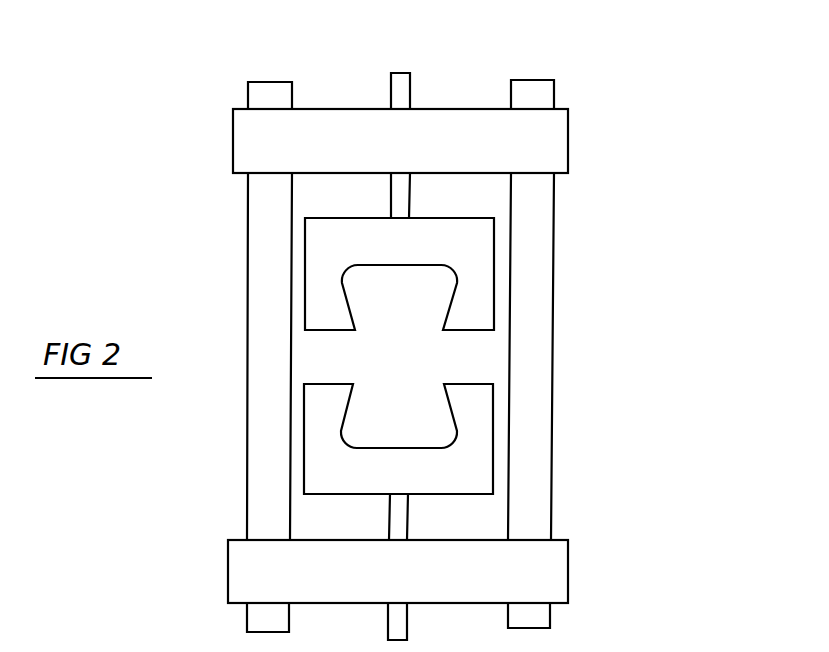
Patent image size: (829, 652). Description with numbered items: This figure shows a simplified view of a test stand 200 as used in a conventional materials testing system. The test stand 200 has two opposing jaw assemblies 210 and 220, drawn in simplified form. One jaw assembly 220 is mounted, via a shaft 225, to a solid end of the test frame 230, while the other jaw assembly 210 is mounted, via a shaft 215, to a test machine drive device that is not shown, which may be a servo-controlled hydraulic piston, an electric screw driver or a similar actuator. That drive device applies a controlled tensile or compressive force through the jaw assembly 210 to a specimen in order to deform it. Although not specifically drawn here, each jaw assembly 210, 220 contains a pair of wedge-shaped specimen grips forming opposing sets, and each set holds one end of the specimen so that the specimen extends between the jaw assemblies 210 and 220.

The test stand 200 is at (483, 356).
The jaw assembly 210 is at (412, 256).
The shaft 215 is at (402, 193).
The jaw assembly 220 is at (425, 483).
The shaft 225 is at (400, 520).
The test frame 230 is at (534, 380).